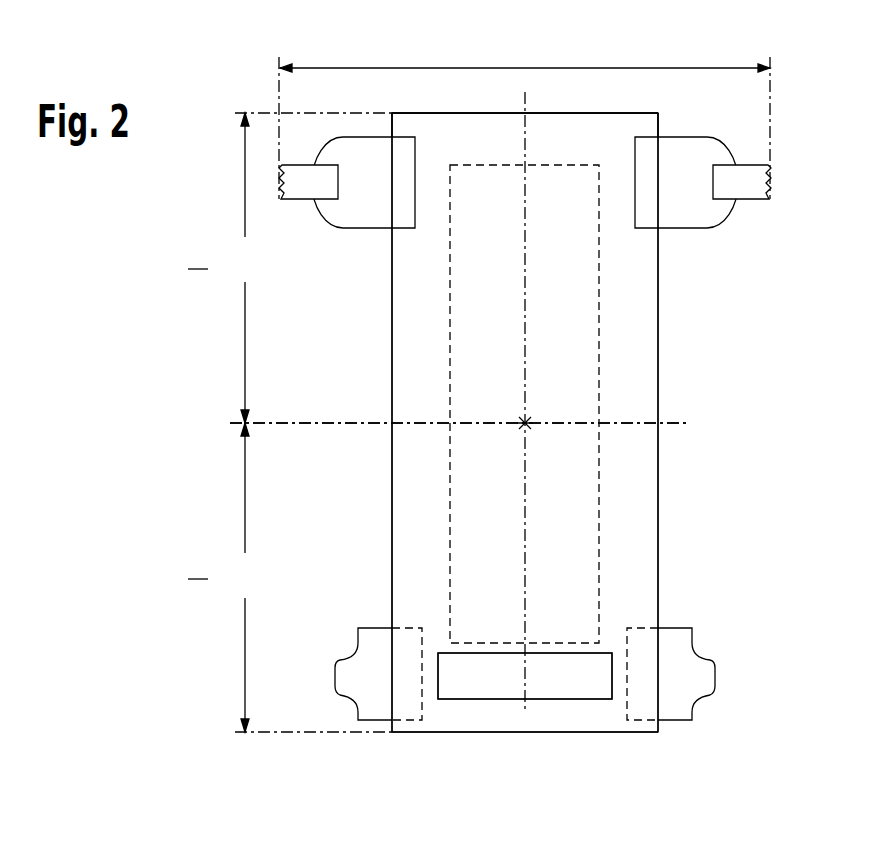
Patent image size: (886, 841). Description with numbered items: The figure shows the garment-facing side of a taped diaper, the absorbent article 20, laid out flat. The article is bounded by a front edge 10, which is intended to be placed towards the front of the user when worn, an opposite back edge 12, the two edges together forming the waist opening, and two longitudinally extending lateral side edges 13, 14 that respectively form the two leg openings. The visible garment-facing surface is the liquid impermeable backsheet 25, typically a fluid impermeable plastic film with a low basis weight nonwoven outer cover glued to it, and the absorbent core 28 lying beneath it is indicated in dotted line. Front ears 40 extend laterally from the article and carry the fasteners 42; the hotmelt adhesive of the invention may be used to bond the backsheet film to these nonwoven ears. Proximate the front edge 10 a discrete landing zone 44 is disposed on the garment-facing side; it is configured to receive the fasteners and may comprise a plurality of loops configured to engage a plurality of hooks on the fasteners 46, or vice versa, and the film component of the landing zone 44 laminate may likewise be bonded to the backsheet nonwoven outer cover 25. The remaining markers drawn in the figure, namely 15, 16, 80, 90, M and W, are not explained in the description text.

The front edge 10 is at (600, 733).
The back edge 12 is at (630, 113).
The longitudinally-extending side edge 13 is at (392, 447).
The longitudinally-extending side edge 14 is at (658, 525).
The rear half of the article 15 is at (224, 577).
The front half of the article 16 is at (224, 268).
The absorbent article 20 is at (738, 322).
The backsheet 25 is at (446, 147).
The absorbent core 28 is at (599, 365).
The front ears 40 is at (358, 215).
The fasteners 42 is at (298, 193).
The landing zone 44 is at (452, 699).
The fasteners 46 is at (355, 683).
The landing zone fastening element 80 is at (523, 699).
The transverse center line 90 is at (687, 423).
The center point M is at (534, 438).
The width of the article W is at (525, 54).